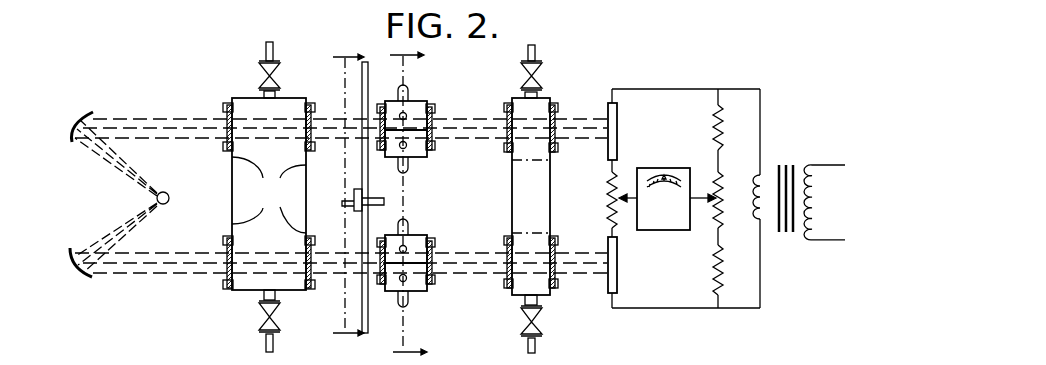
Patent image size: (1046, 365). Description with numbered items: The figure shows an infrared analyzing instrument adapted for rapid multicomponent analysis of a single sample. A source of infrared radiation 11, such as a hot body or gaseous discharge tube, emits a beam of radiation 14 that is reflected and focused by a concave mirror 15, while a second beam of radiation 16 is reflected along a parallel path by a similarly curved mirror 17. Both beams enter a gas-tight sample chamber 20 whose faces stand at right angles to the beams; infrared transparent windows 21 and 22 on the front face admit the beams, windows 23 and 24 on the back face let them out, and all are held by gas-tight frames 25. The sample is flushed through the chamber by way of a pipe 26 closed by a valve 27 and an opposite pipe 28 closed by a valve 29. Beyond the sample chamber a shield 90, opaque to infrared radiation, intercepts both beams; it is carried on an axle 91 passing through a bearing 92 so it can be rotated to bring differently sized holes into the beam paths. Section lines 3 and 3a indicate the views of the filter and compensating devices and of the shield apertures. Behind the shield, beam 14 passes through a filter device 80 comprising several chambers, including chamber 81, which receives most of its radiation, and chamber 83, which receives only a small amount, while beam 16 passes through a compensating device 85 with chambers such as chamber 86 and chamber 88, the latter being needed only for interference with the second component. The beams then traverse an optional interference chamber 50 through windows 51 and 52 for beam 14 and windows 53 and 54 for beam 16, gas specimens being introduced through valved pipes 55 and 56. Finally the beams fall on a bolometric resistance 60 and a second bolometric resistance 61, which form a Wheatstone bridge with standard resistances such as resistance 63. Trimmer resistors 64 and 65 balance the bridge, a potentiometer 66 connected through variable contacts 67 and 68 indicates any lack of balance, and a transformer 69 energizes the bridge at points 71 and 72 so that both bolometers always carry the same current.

The source of infrared radiation 11 is at (156, 198).
The beam of radiation 14 is at (152, 129).
The concave mirror 15 is at (86, 112).
The second beam of radiation 16 is at (148, 262).
The mirror 17 is at (84, 279).
The sample chamber 20 is at (232, 193).
The window 21 is at (224, 110).
The window 22 is at (226, 280).
The window 23 is at (313, 111).
The window 24 is at (312, 272).
The gas-tight frames 25 is at (269, 195).
The pipe 26 is at (266, 46).
The valve 27 is at (262, 75).
The second pipe 28 is at (266, 342).
The valve 29 is at (262, 314).
The section line 3 is at (408, 200).
The section line 3a is at (348, 198).
The interference chamber 50 is at (548, 98).
The window 51 is at (505, 112).
The window 52 is at (557, 114).
The window 53 is at (505, 245).
The window 54 is at (557, 282).
The valved pipe 55 is at (536, 50).
The valved pipe 56 is at (535, 346).
The bolometric resistance 60 is at (617, 118).
The second bolometric resistance 61 is at (617, 272).
The standard resistance 63 is at (716, 284).
The trimmer resistor 64 is at (601, 200).
The trimmer resistor 65 is at (720, 192).
The potentiometer 66 is at (674, 230).
The variable contact 67 is at (629, 193).
The variable contact 68 is at (696, 201).
The transformer 69 is at (783, 233).
The point 71 is at (721, 88).
The point 72 is at (718, 308).
The filter device 80 is at (392, 100).
The chamber 81 is at (415, 108).
The chamber 83 is at (418, 150).
The compensating device 85 is at (391, 292).
The chamber 86 is at (415, 240).
The chamber 88 is at (416, 284).
The shield 90 is at (368, 330).
The axle 91 is at (346, 203).
The bearing 92 is at (357, 189).